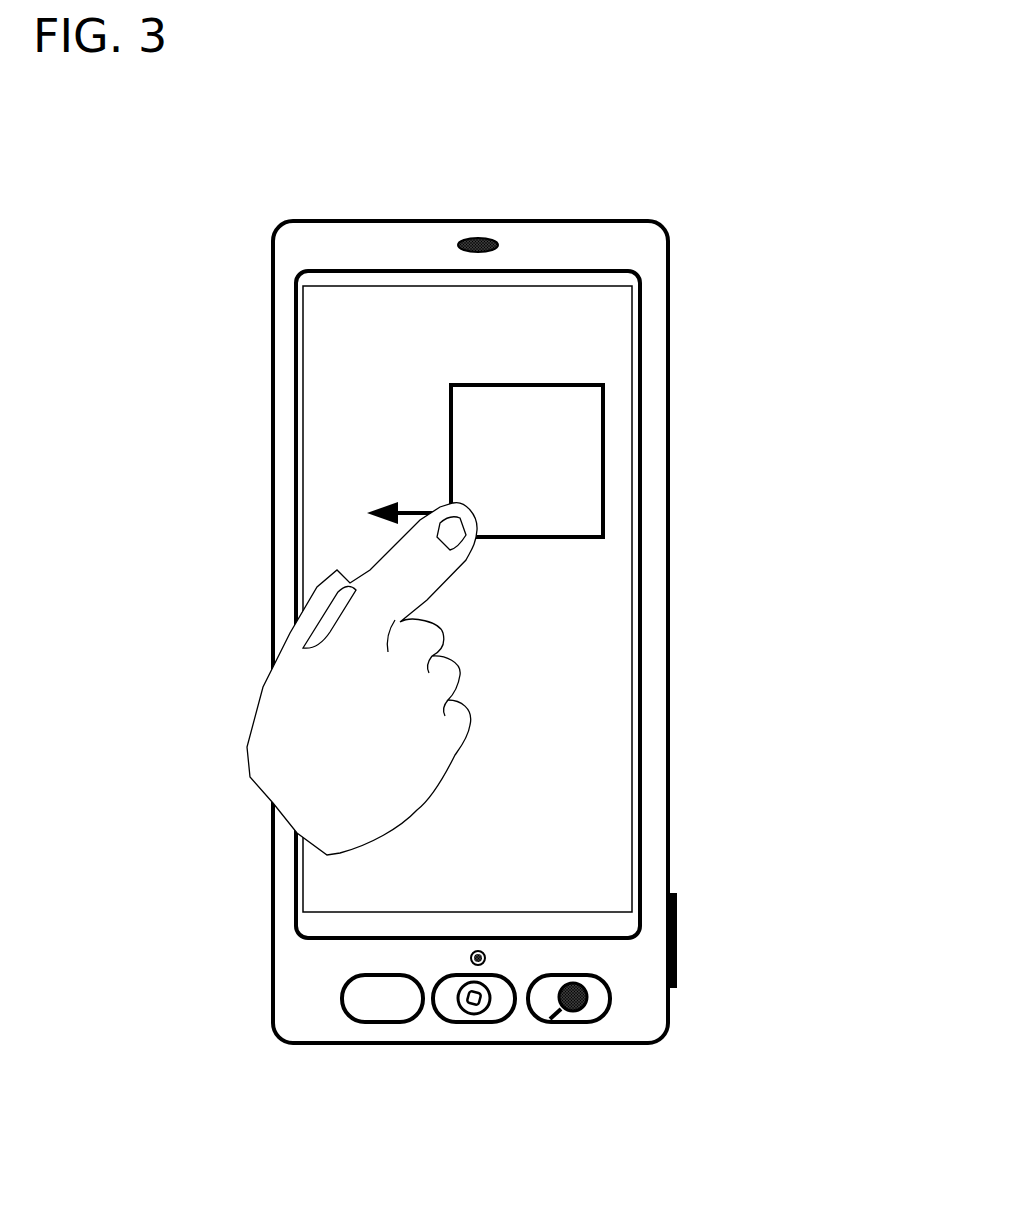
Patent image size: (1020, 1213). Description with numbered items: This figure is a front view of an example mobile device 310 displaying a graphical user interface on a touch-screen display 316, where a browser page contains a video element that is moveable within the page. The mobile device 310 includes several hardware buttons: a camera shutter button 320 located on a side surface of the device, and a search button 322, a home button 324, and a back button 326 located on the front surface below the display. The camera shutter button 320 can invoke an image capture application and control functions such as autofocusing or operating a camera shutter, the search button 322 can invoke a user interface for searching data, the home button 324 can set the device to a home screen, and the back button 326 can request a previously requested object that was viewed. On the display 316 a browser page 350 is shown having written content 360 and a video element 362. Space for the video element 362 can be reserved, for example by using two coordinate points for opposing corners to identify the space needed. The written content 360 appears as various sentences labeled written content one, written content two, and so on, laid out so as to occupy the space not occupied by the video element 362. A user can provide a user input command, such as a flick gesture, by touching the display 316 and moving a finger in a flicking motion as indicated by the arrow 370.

The mobile device 310 is at (801, 312).
The touch-screen display 316 is at (618, 428).
The camera shutter button 320 is at (677, 932).
The search button 322 is at (585, 1008).
The home button 324 is at (450, 1010).
The back button 326 is at (360, 1008).
The browser page 350 is at (652, 643).
The written content 360 is at (330, 352).
The video element 362 is at (600, 483).
The arrow 370 is at (413, 522).